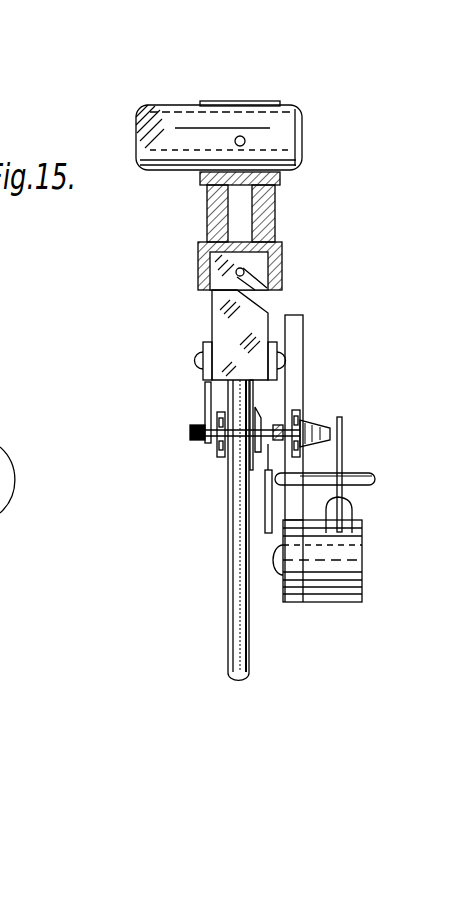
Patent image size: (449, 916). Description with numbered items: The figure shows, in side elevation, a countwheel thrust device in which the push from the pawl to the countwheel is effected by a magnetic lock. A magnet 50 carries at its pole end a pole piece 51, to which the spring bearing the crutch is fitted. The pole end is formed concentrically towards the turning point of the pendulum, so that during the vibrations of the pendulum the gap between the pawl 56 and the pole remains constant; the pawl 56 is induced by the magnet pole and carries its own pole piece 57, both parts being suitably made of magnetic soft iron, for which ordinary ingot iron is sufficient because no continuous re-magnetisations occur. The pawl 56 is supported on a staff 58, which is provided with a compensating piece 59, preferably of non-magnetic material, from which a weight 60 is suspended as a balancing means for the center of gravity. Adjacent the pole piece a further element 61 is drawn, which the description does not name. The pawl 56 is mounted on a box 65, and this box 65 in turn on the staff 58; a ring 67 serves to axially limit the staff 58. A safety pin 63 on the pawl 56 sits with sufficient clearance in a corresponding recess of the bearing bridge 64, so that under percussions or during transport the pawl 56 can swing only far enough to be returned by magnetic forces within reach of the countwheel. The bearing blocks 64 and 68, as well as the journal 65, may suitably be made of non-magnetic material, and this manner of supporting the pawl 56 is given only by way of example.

The magnet 50 is at (295, 378).
The pole piece 51 is at (343, 584).
The pawl 56 is at (298, 410).
The pole piece 57 is at (322, 425).
The staff 58 is at (256, 407).
The compensating piece 59 is at (217, 446).
The weight 60 is at (232, 465).
The rod 61 is at (344, 447).
The safety pin 63 is at (262, 443).
The bearing bridge 64 is at (268, 383).
The box 65 is at (270, 469).
The ring 67 is at (190, 432).
The bearing block 68 is at (209, 387).